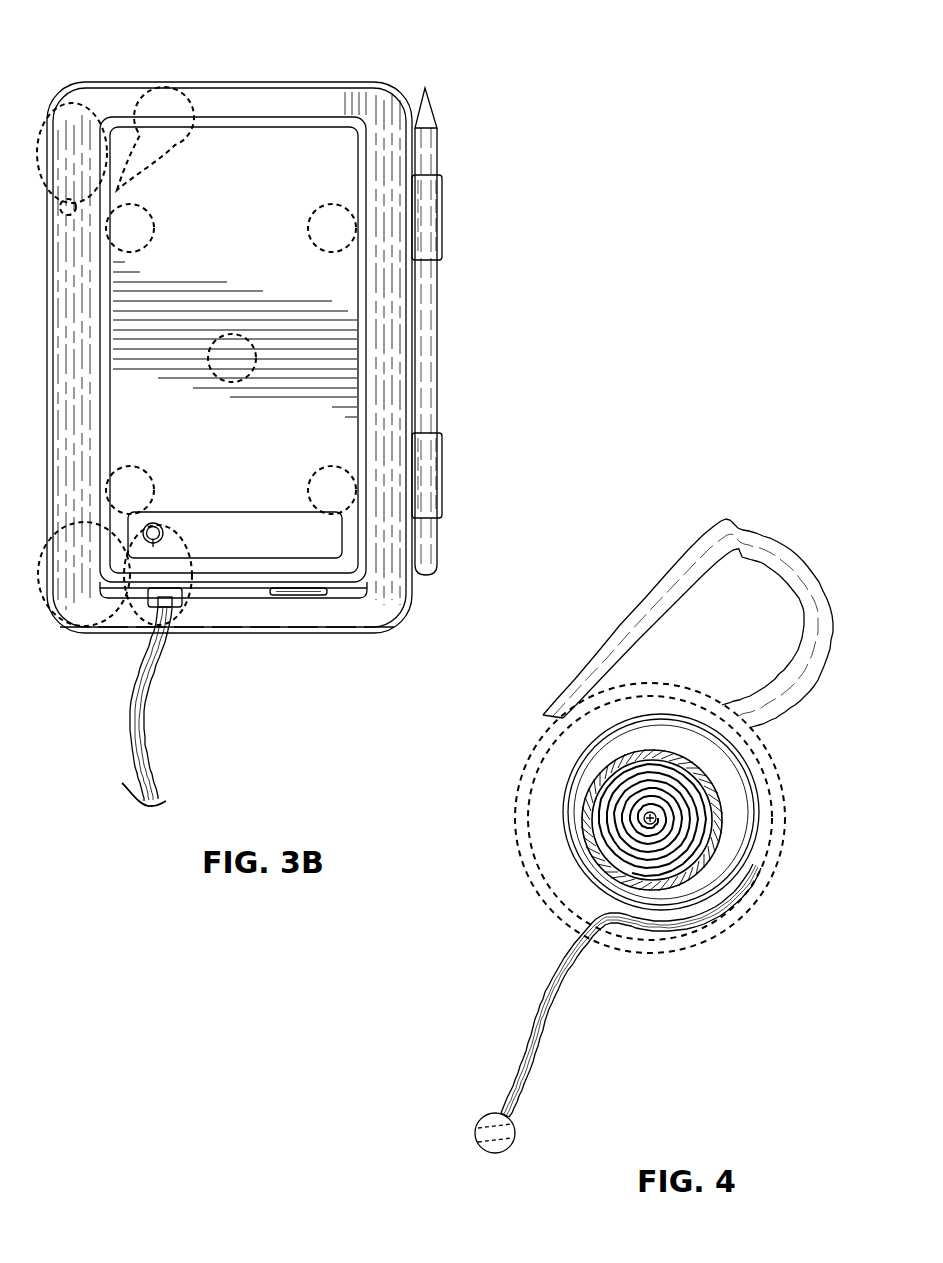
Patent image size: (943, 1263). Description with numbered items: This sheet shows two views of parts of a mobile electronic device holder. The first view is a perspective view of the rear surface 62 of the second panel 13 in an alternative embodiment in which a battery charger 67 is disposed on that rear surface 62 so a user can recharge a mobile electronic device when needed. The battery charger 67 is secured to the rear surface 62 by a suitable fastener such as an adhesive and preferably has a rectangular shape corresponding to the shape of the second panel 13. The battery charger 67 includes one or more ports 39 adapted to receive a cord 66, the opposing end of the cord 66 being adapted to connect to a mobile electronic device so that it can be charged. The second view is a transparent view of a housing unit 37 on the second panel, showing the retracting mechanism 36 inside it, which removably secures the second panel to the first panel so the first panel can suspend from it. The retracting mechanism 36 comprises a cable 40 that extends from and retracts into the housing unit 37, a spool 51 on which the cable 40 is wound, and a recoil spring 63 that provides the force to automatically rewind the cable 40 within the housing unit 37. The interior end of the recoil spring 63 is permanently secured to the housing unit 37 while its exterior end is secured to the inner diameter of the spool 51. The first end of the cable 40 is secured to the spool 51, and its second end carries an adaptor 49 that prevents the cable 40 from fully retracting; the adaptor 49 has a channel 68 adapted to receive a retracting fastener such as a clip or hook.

In FIG. 3B, the second panel 13 is at (318, 102).
In FIG. 3B, the battery charger 67 is at (328, 392).
In FIG. 3B, the rear surface 62 is at (383, 620).
In FIG. 3B, the port 39 is at (310, 595).
In FIG. 3B, the cord 66 is at (153, 767).
In FIG. 4, the retracting mechanism 36 is at (804, 764).
In FIG. 4, the housing unit 37 is at (710, 943).
In FIG. 4, the spool 51 is at (715, 833).
In FIG. 4, the recoil spring 63 is at (597, 823).
In FIG. 4, the cable 40 is at (540, 998).
In FIG. 4, the adaptor 49 is at (485, 1112).
In FIG. 4, the channel 68 is at (472, 1137).